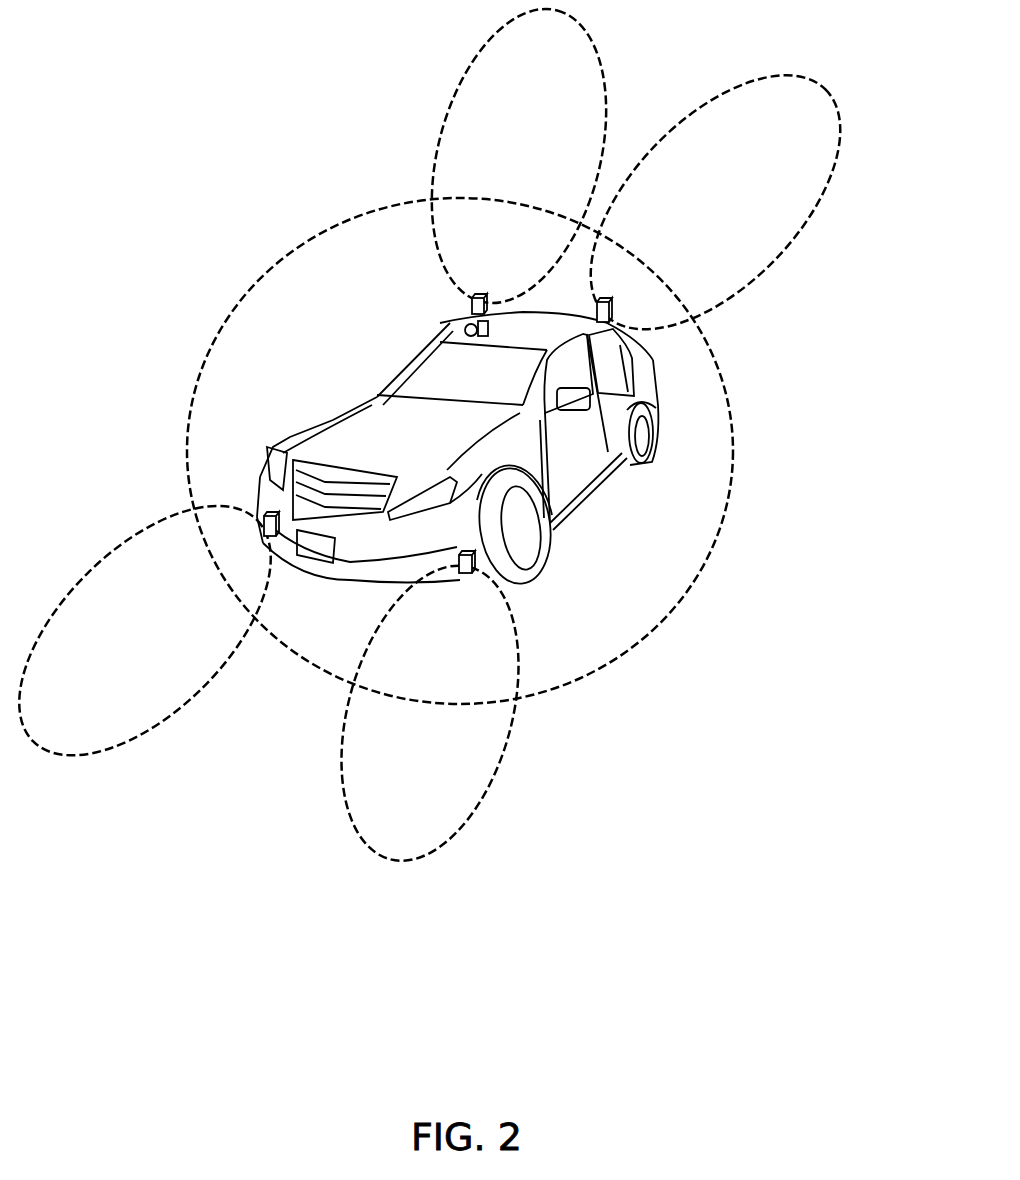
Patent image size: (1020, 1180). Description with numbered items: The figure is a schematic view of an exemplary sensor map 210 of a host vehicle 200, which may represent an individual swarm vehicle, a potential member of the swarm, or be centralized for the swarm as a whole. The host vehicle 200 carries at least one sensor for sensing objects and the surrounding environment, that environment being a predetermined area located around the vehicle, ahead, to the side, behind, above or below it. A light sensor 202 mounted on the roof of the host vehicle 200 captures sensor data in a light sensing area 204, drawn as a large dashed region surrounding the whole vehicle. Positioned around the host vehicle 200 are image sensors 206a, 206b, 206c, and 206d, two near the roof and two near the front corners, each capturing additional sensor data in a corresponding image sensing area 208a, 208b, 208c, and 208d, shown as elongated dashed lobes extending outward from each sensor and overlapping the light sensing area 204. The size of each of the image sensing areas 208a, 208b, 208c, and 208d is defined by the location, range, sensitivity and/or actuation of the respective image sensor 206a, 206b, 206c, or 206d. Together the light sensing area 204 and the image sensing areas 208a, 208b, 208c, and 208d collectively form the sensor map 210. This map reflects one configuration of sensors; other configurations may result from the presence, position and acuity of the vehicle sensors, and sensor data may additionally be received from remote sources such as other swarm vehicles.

The host vehicle 200 is at (353, 392).
The light sensor 202 is at (470, 323).
The light sensing area 204 is at (727, 386).
The image sensor 206a is at (476, 294).
The image sensor 206b is at (616, 305).
The image sensor 206c is at (266, 517).
The image sensor 206d is at (475, 553).
The image sensing area 208a is at (602, 65).
The image sensing area 208b is at (838, 128).
The image sensing area 208c is at (187, 703).
The image sensing area 208d is at (493, 773).
The sensor map 210 is at (201, 367).